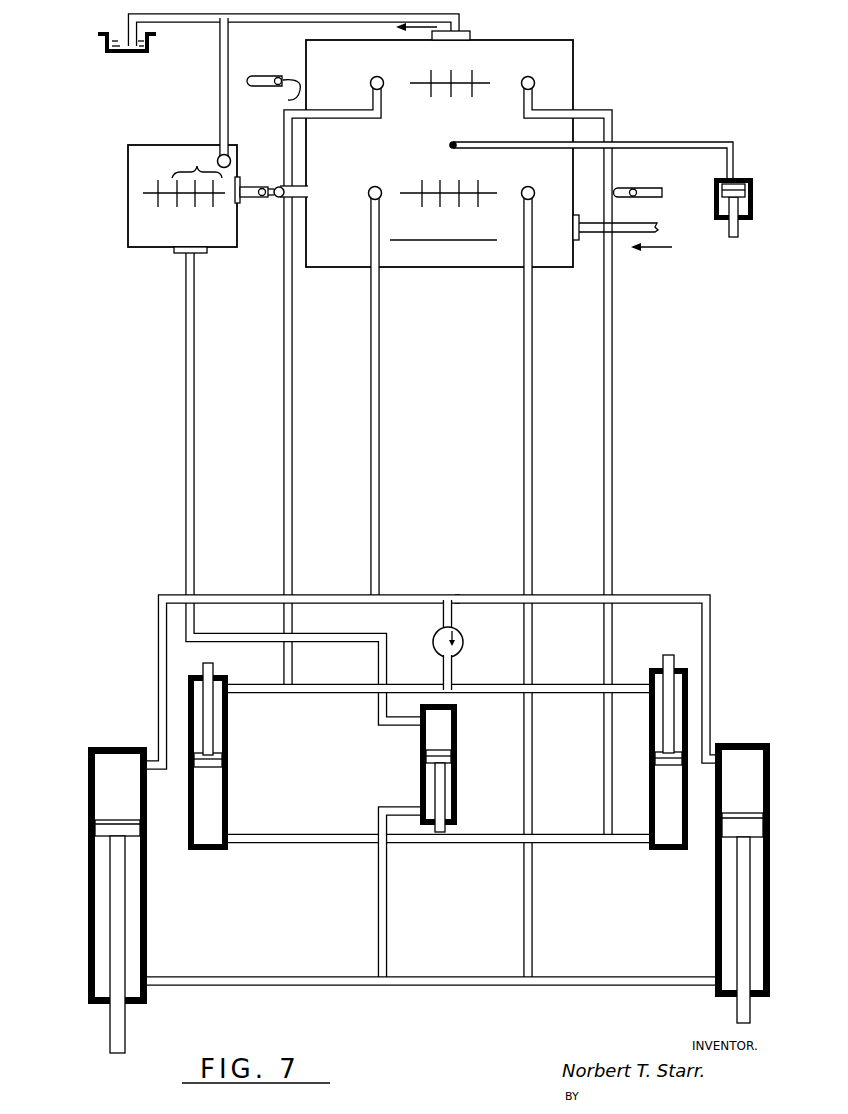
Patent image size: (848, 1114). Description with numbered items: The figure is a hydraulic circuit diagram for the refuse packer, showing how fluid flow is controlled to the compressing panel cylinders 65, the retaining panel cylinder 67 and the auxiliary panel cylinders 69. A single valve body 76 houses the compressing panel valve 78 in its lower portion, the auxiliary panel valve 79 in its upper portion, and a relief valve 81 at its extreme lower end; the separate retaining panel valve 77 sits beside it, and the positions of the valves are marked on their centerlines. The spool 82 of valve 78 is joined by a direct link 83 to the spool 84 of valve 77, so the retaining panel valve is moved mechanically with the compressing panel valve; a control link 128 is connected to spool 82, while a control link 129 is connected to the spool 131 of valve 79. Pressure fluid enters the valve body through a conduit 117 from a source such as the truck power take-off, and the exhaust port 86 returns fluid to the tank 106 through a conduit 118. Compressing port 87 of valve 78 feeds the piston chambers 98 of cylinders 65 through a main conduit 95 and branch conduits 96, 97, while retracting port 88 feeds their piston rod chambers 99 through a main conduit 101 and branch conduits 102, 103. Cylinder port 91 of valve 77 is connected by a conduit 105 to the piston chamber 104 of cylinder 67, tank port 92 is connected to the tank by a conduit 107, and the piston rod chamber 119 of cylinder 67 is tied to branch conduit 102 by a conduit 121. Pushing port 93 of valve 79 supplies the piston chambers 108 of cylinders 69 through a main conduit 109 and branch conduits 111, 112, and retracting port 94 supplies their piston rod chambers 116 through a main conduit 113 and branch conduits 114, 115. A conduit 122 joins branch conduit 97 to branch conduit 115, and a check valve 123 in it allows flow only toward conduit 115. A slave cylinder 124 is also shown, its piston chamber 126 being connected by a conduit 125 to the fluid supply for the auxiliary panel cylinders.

The compressing panel cylinders 65 is at (148, 937).
The retaining panel cylinder 67 is at (457, 758).
The auxiliary panel cylinders 69 is at (231, 800).
The valve body 76 is at (577, 60).
The retaining panel valve 77 is at (144, 198).
The compressing panel valve 78 is at (410, 198).
The auxiliary panel valve 79 is at (421, 88).
The relief valve 81 is at (428, 243).
The spool 82 is at (300, 188).
The direct link 83 is at (272, 198).
The spool 84 is at (253, 186).
The exhaust port 86 is at (470, 33).
The compressing port 87 is at (368, 193).
The retracting port 88 is at (532, 187).
The cylinder port 91 is at (205, 252).
The tank port 92 is at (232, 161).
The pushing port 93 is at (531, 77).
The retracting port 94 is at (383, 68).
The main conduit 95 is at (383, 405).
The branch conduit 96 is at (318, 594).
The branch conduit 97 is at (497, 575).
The piston chambers 98 is at (95, 790).
The piston rod chambers 99 is at (95, 937).
The main conduit 101 is at (536, 375).
The branch conduit 102 is at (428, 986).
The branch conduit 103 is at (620, 986).
The piston chamber 104 is at (447, 723).
The conduit 105 is at (186, 355).
The tank 106 is at (92, 47).
The conduit 107 is at (219, 68).
The piston chambers 108 is at (214, 852).
The main conduit 109 is at (615, 383).
The branch conduit 111 is at (462, 844).
The branch conduit 112 is at (636, 837).
The main conduit 113 is at (296, 494).
The branch conduit 114 is at (255, 692).
The branch conduit 115 is at (328, 693).
The piston rod chambers 116 is at (215, 741).
The conduit 117 is at (652, 223).
The conduit 118 is at (300, 23).
The piston rod chamber 119 is at (450, 792).
The conduit 121 is at (388, 912).
The conduit 122 is at (456, 675).
The check valve 123 is at (463, 634).
The slave cylinder 124 is at (758, 212).
The conduit 125 is at (672, 140).
The piston chamber 126 is at (749, 185).
The control link 128 is at (652, 188).
The control link 129 is at (259, 74).
The spool 131 is at (287, 95).